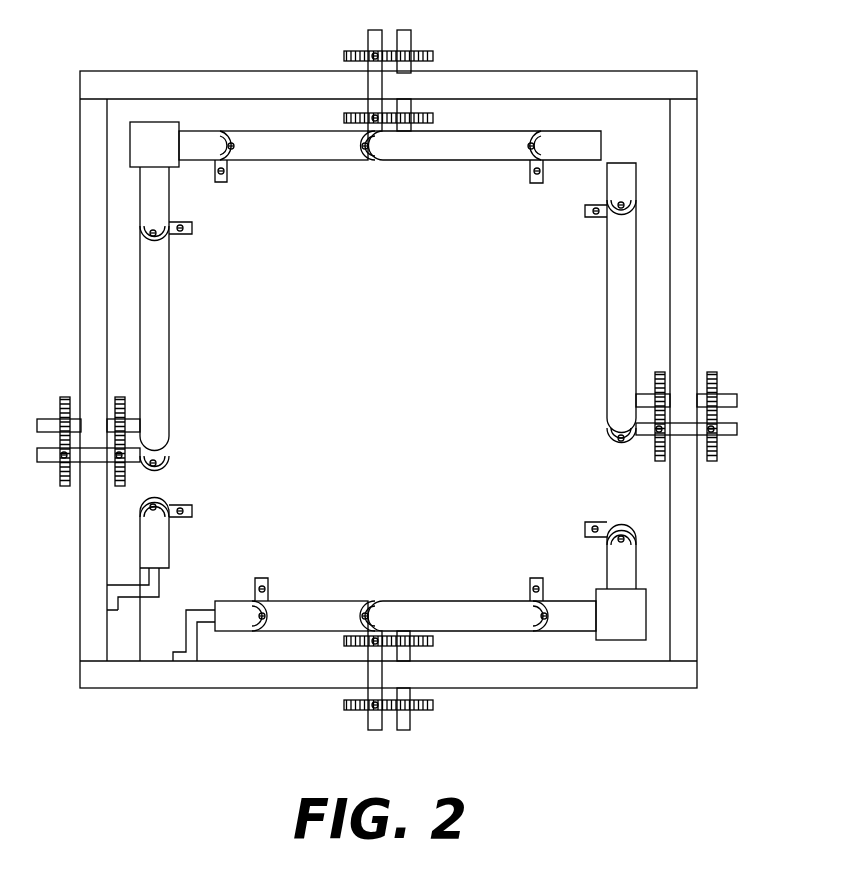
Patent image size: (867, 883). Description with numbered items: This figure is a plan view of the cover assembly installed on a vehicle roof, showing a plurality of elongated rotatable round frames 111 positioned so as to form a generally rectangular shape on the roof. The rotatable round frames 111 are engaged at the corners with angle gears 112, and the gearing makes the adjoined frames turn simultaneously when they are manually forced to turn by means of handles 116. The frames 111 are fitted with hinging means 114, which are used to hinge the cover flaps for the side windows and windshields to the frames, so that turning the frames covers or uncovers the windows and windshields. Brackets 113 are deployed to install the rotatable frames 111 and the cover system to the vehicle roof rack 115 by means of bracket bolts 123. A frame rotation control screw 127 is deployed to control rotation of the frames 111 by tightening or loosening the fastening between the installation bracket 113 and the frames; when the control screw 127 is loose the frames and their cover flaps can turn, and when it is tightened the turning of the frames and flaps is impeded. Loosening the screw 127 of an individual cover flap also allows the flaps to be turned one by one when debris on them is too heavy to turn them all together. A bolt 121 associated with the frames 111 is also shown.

The elongated rotatable round frame 111 is at (278, 145).
The angle gear 112 is at (152, 125).
The bracket 113 is at (410, 719).
The hinging means 114 is at (530, 138).
The vehicle roof rack 115 is at (692, 263).
The handle 116 is at (192, 630).
The bolt 121 is at (360, 613).
The bracket bolt 123 is at (715, 447).
The frame rotation control screw 127 is at (545, 617).